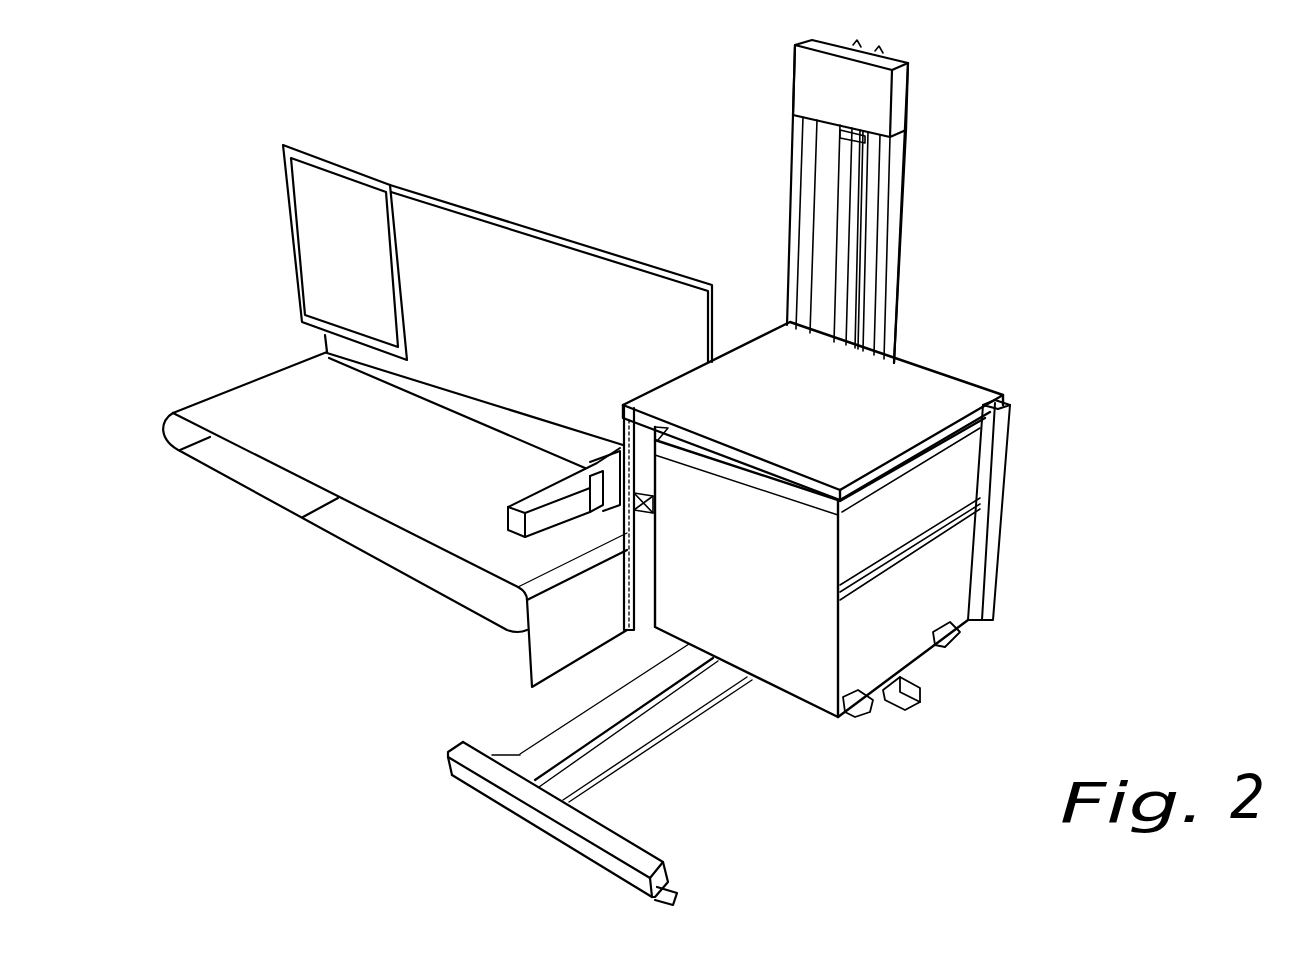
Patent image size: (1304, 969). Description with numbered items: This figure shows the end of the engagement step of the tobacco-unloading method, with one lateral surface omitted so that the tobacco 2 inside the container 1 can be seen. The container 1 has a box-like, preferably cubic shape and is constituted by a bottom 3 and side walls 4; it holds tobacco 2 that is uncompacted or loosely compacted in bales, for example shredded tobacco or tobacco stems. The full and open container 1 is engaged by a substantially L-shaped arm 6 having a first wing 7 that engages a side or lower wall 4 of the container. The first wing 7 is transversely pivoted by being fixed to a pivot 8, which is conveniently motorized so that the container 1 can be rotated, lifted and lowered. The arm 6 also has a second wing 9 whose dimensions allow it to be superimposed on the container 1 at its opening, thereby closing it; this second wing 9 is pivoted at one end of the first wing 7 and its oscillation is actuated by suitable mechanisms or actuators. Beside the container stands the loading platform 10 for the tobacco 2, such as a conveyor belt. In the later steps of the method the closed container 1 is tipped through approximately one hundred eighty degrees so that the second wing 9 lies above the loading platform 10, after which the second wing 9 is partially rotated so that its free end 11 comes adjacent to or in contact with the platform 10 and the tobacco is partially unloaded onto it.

The container 1 is at (1068, 350).
The tobacco 2 is at (815, 660).
The bottom 3 is at (780, 697).
The side walls 4 is at (627, 597).
The L-shaped arm 6 is at (753, 330).
The first wing 7 is at (620, 448).
The pivot 8 is at (535, 497).
The second wing 9 is at (923, 377).
The loading platform 10 is at (262, 405).
The free end 11 is at (965, 428).